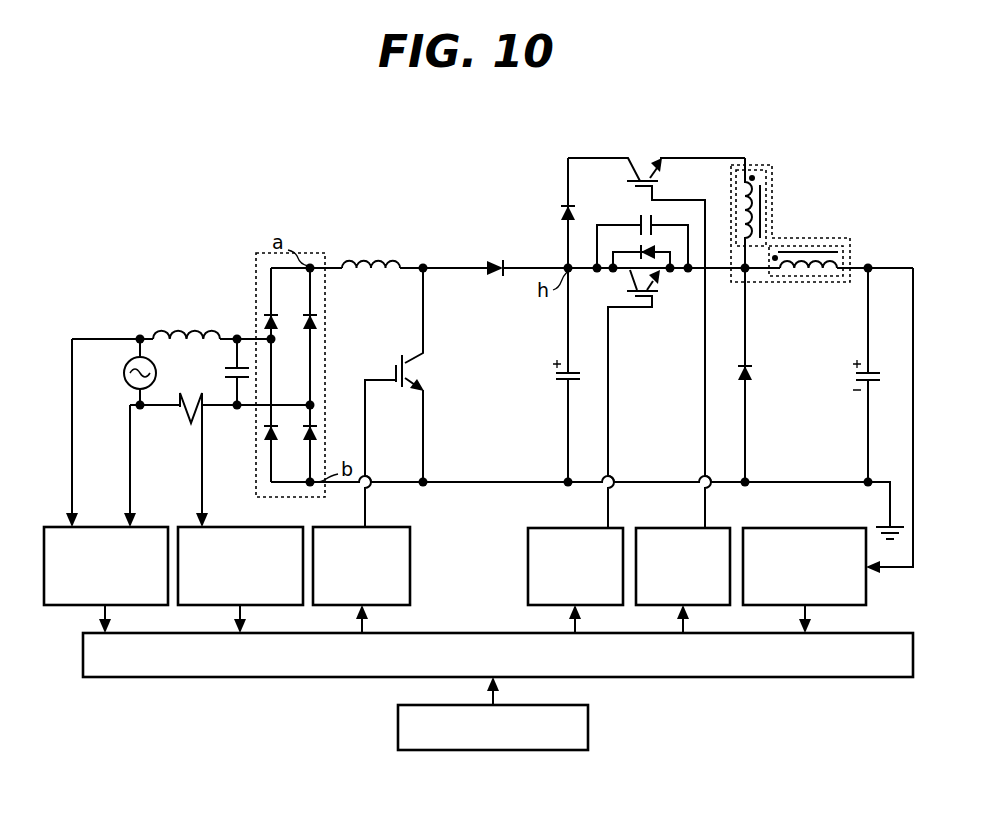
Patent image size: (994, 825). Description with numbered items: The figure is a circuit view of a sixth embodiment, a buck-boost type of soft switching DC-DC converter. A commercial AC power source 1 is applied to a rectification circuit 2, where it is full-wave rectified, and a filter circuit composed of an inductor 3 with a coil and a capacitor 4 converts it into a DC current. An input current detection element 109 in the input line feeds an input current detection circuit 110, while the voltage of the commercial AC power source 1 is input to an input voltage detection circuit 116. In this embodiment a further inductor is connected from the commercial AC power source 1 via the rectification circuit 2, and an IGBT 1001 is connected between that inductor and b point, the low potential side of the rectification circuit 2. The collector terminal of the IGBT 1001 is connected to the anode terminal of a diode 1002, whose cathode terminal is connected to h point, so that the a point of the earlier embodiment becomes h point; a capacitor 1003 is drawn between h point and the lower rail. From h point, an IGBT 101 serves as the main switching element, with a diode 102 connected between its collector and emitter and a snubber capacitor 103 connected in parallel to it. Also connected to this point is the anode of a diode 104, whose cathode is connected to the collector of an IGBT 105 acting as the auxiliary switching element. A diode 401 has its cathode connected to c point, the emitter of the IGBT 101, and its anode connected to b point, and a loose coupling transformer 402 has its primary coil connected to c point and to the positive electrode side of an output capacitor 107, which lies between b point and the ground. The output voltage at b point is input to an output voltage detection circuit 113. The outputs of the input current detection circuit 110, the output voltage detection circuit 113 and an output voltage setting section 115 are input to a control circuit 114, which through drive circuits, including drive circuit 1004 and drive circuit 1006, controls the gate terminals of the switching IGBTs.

The commercial AC power source 1 is at (123, 372).
The rectification circuit 2 is at (256, 272).
The inductor 3 is at (193, 322).
The capacitor 4 is at (223, 371).
The input current detection element 109 is at (188, 431).
The input current detection circuit 110 is at (242, 527).
The input voltage detection circuit 116 is at (62, 607).
The IGBT 1001 is at (412, 393).
The diode 1002 is at (502, 282).
The smoothing capacitor 1003 is at (554, 383).
The drive circuit 1004 is at (393, 527).
The drive circuit 1006 is at (672, 514).
The IGBT 101 is at (646, 298).
The diode 102 is at (640, 248).
The snubber capacitor 103 is at (642, 217).
The diode 104 is at (563, 207).
The IGBT 105 is at (640, 170).
The diode 401 is at (752, 373).
The loose coupling transformer 402 is at (800, 201).
The output capacitor 107 is at (855, 381).
The output voltage detection circuit 113 is at (806, 527).
The control circuit 114 is at (856, 633).
The output voltage setting section 115 is at (592, 720).